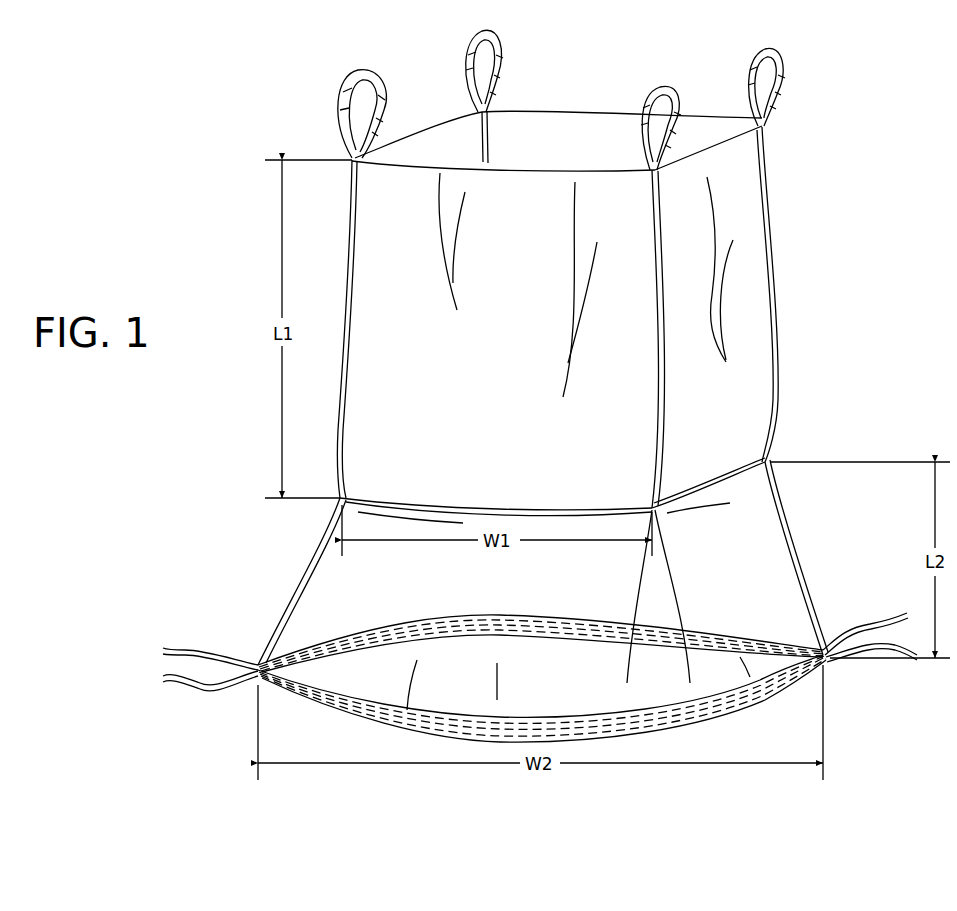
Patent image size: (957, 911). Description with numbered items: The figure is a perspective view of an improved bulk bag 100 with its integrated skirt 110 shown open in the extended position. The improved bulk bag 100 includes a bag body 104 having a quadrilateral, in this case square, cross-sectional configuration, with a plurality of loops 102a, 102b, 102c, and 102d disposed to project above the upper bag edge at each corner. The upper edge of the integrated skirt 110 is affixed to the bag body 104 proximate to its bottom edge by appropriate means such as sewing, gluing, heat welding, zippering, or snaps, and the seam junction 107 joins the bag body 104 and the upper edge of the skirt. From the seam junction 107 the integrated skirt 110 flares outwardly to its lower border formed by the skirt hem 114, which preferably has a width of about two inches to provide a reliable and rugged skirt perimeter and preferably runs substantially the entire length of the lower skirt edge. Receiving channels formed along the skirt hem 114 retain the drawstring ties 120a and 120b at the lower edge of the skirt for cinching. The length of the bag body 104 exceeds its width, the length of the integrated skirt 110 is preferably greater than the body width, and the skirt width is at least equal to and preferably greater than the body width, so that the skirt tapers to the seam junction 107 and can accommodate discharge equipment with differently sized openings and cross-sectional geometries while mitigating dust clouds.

The improved bulk bag 100 is at (160, 138).
The loop 102a is at (340, 98).
The loop 102b is at (465, 62).
The loop 102c is at (682, 92).
The loop 102d is at (783, 60).
The bag body 104 is at (752, 265).
The seam junction 107 is at (768, 458).
The integrated skirt 110 is at (296, 583).
The skirt hem 114 is at (518, 615).
The drawstring tie 120a is at (185, 650).
The drawstring tie 120b is at (875, 627).